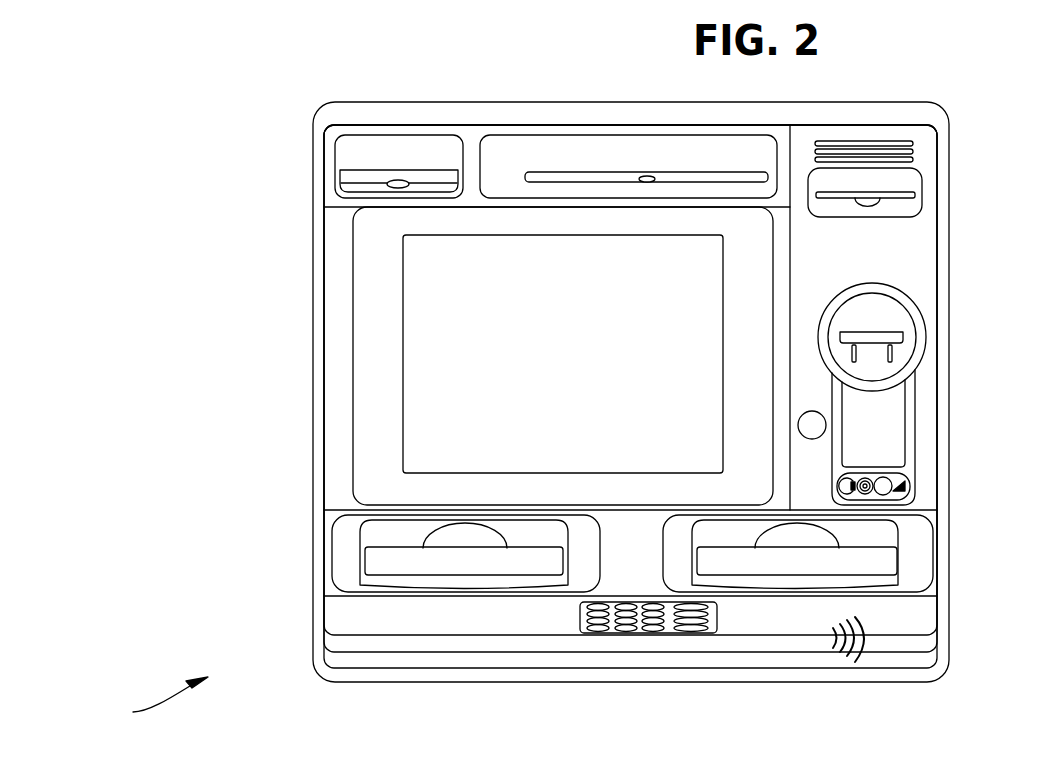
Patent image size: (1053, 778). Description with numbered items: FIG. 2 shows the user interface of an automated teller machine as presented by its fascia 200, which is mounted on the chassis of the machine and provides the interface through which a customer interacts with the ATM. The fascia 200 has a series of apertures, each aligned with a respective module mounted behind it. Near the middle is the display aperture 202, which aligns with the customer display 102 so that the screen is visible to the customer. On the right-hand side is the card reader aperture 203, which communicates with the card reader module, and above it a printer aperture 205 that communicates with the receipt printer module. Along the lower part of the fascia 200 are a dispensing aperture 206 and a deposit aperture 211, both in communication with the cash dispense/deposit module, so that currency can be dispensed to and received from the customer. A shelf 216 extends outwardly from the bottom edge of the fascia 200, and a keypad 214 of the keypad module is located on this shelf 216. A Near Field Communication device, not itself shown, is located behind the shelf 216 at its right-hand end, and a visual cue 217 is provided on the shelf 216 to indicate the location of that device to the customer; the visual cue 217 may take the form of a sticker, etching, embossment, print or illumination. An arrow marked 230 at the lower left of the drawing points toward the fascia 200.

The customer display 102 is at (518, 267).
The fascia 200 is at (313, 370).
The display aperture 202 is at (353, 247).
The card reader aperture 203 is at (903, 331).
The printer aperture 205 is at (925, 182).
The dispensing aperture 206 is at (438, 558).
The deposit aperture 211 is at (782, 565).
The keypad 214 is at (640, 633).
The shelf 216 is at (923, 647).
The visual cue 217 is at (863, 660).
The user position indicator arrow 230 is at (147, 702).